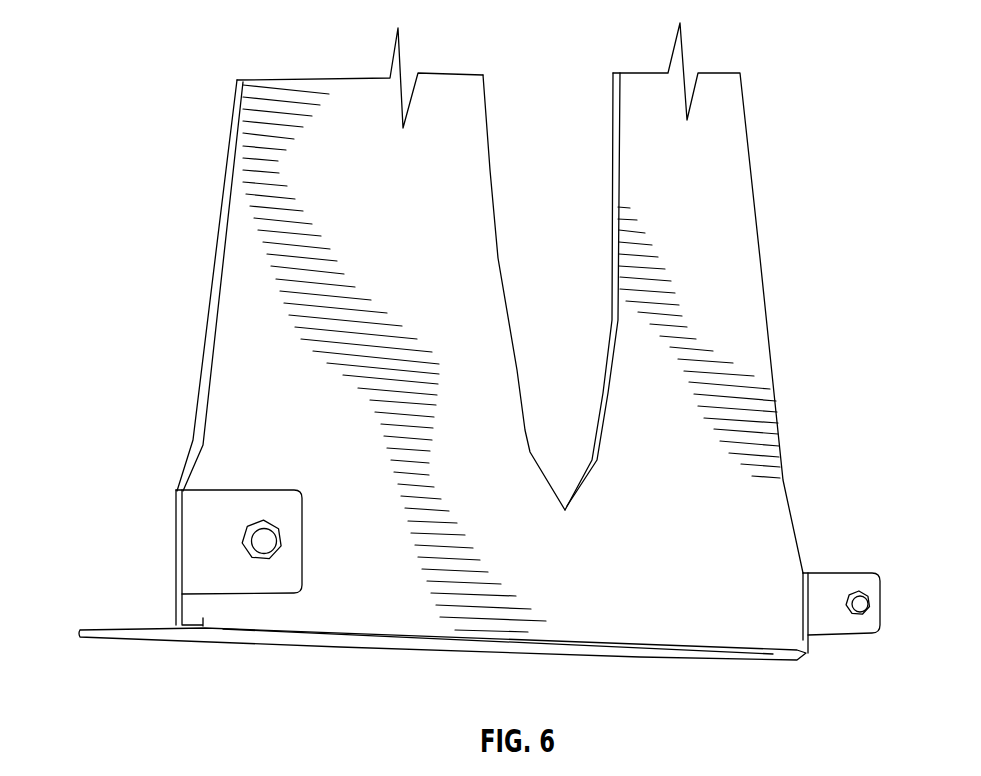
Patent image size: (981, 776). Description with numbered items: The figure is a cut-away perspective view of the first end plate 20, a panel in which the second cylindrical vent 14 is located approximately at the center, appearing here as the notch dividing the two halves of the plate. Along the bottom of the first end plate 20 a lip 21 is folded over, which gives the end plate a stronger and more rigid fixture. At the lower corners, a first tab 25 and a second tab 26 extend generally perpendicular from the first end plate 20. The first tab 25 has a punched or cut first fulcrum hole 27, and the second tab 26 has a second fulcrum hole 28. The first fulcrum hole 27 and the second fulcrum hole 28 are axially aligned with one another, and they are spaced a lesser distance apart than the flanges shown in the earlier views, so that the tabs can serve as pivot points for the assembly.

The first end plate 20 is at (490, 327).
The second cylindrical vent 14 is at (520, 352).
The first tab 25 is at (198, 522).
The first fulcrum hole 27 is at (265, 547).
The second tab 26 is at (825, 600).
The second fulcrum hole 28 is at (864, 608).
The lip 21 is at (137, 627).